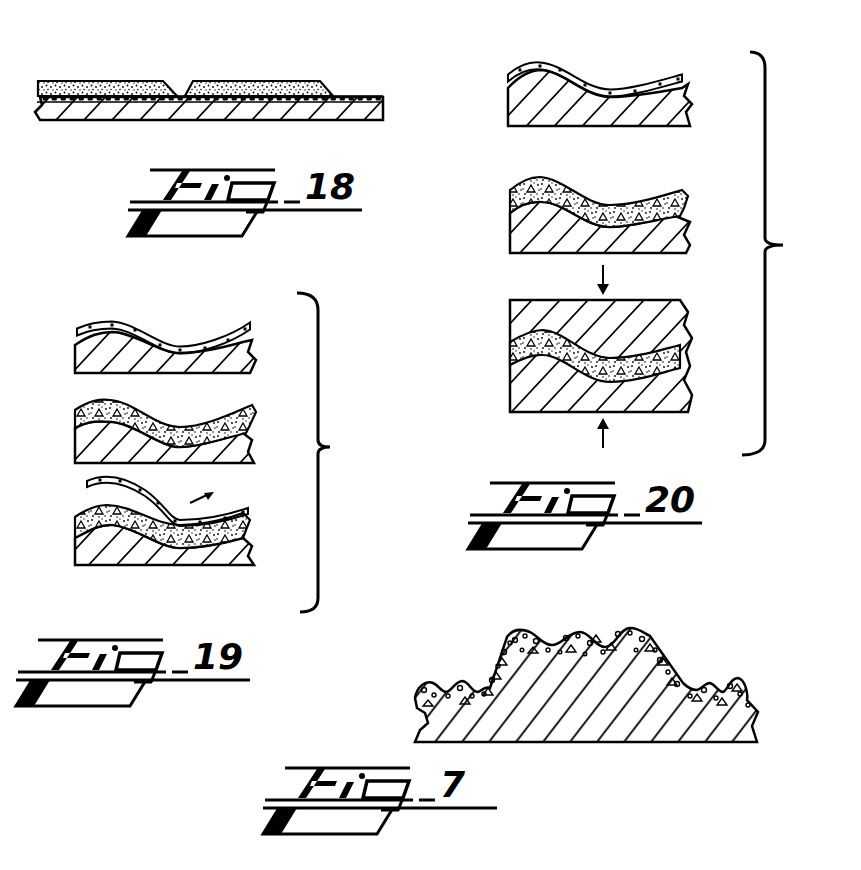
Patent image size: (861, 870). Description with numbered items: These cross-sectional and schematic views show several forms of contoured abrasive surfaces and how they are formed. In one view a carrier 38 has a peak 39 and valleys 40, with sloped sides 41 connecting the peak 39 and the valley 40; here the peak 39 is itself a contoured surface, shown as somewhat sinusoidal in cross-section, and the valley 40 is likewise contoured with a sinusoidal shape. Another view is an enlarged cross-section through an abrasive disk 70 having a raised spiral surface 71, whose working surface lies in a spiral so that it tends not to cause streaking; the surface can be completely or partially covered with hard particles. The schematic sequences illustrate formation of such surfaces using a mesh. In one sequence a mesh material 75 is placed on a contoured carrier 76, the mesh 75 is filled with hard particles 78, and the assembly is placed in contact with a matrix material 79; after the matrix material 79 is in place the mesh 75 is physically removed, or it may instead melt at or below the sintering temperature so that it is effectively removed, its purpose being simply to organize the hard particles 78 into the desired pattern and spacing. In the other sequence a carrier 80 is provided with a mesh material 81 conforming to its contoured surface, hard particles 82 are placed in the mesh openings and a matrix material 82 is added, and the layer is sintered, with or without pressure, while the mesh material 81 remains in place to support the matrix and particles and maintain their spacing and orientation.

In FIG. 18, the disk 70 is at (352, 98).
In FIG. 18, the raised spiral surface 71 is at (324, 81).
In FIG. 19, the mesh material 75 is at (142, 324).
In FIG. 19, the carrier 76 is at (165, 347).
In FIG. 19, the hard particles 78 is at (255, 444).
In FIG. 19, the matrix material 79 is at (218, 416).
In FIG. 20, the carrier 80 is at (668, 125).
In FIG. 20, the mesh material 81 is at (632, 89).
In FIG. 20, the hard particles and matrix material 82 is at (641, 202).
In FIG. 7, the carrier 38 is at (630, 705).
In FIG. 7, the peak 39 is at (595, 624).
In FIG. 7, the valleys 40 is at (744, 670).
In FIG. 7, the sloped sides 41 is at (482, 666).